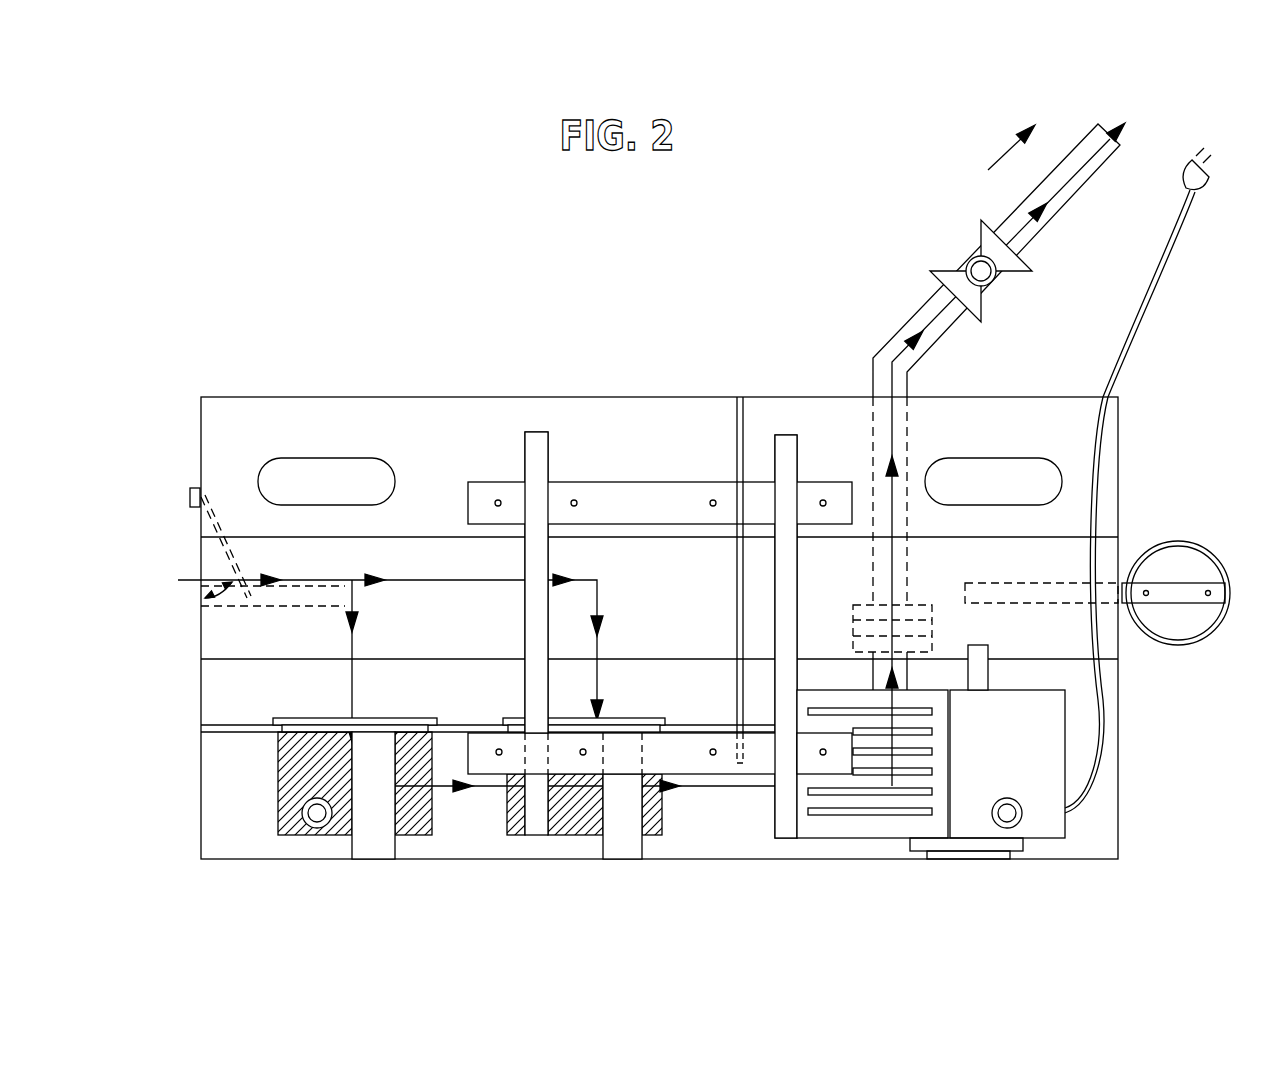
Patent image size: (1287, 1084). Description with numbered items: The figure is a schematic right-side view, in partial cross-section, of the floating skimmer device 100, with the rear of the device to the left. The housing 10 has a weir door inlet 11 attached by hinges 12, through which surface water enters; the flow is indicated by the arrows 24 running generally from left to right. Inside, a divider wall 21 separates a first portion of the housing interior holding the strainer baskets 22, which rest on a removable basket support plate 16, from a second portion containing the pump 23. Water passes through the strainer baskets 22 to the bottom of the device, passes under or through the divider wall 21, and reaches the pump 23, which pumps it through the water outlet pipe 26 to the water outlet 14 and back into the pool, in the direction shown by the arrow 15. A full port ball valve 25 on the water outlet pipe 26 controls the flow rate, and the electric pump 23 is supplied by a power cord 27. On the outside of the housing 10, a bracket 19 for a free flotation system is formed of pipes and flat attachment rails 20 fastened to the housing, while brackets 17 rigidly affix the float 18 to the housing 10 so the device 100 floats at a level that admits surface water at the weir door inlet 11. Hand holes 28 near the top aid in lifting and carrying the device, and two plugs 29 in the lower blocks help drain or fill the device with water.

The device 100 is at (376, 252).
The housing 10 is at (1120, 458).
The weir door inlet 11 is at (205, 550).
The hinges 12 is at (190, 500).
The water outlet 14 is at (1100, 124).
The direction of water flow 15 is at (994, 162).
The basket support plate 16 is at (228, 725).
The brackets 17 is at (1058, 578).
The float 18 is at (1193, 628).
The bracket 19 is at (536, 418).
The attachment rails 20 is at (653, 472).
The divider wall 21 is at (740, 378).
The strainer baskets 22 is at (506, 705).
The pump 23 is at (981, 749).
The arrows 24 is at (398, 573).
The ball valve 25 is at (1013, 300).
The water outlet pipe 26 is at (1065, 212).
The power cord 27 is at (1201, 148).
The hand holes 28 is at (302, 455).
The plugs 29 is at (315, 850).